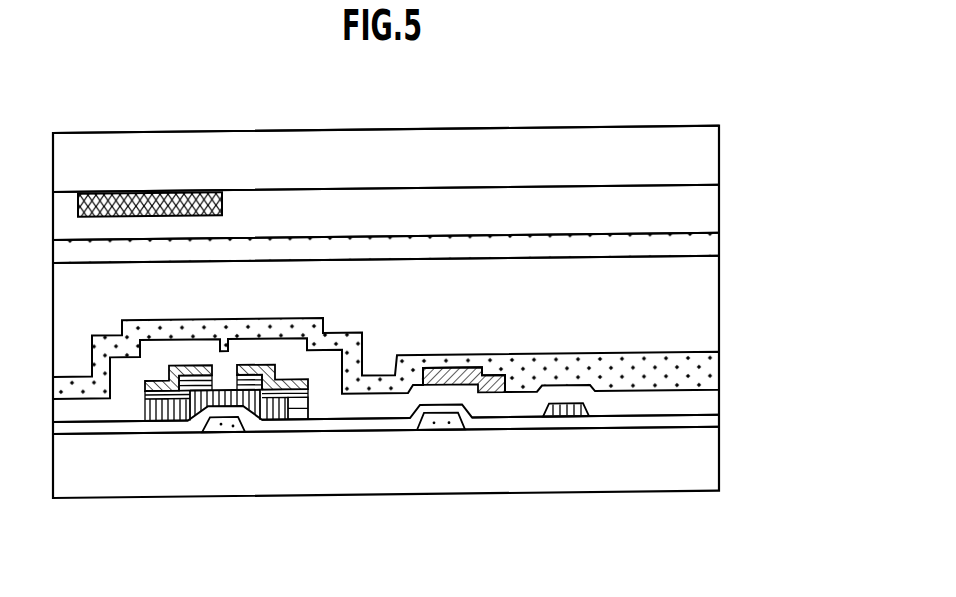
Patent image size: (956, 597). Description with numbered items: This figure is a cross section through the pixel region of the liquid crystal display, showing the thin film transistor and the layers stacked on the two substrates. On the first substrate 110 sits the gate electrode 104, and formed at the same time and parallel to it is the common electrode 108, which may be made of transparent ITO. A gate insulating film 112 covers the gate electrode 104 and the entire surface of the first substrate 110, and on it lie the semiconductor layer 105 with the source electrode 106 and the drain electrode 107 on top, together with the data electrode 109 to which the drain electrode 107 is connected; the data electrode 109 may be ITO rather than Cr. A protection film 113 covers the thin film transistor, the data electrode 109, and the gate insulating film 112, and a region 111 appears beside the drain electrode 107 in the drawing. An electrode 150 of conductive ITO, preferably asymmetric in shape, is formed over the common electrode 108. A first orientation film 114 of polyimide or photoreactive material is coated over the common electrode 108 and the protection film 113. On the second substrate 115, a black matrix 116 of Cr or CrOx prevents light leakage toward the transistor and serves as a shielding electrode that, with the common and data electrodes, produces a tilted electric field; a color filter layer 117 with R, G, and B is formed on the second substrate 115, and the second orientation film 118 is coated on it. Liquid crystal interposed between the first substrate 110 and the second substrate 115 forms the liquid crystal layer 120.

The gate electrode 104 is at (228, 435).
The semiconductor layer 105 is at (165, 422).
The source electrode 106 is at (194, 365).
The drain electrode 107 is at (256, 365).
The common electrode 108 is at (440, 423).
The data electrode 109 is at (567, 423).
The first substrate 110 is at (712, 457).
The capacitor electrode 111 is at (287, 422).
The gate insulating film 112 is at (712, 420).
The protection film 113 is at (712, 400).
The first orientation film 114 is at (712, 373).
The second substrate 115 is at (710, 155).
The black matrix 116 is at (148, 194).
The color filter layer 117 is at (710, 211).
The second orientation film 118 is at (712, 243).
The liquid crystal layer 120 is at (712, 317).
The electrode 150 is at (455, 369).